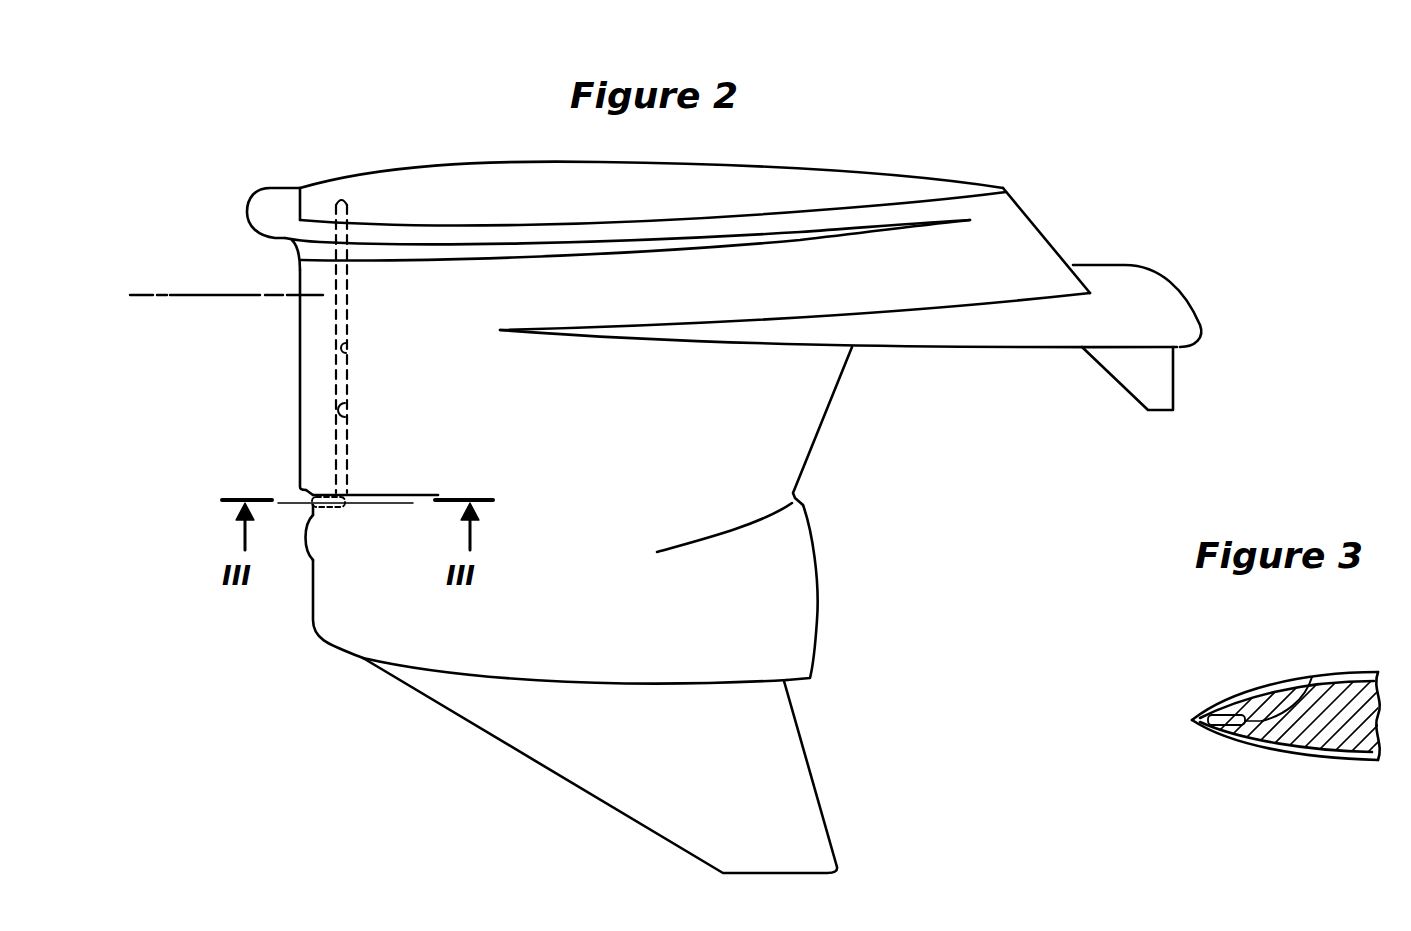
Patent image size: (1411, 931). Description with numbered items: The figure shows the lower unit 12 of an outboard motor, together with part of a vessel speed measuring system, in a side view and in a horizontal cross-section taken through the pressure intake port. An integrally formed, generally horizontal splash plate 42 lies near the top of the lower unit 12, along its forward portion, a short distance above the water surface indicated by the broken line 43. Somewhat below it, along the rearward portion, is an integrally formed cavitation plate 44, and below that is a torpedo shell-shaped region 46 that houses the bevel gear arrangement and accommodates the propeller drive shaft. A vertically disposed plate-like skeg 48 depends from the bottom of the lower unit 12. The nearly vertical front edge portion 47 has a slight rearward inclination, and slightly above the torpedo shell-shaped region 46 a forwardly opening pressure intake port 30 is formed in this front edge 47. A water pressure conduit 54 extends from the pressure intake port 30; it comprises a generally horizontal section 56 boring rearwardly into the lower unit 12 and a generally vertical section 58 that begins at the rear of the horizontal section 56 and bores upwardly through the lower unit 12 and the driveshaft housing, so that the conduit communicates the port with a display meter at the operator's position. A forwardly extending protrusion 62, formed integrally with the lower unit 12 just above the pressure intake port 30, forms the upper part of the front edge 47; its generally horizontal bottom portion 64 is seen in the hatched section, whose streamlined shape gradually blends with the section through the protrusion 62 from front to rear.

In FIG. 2, the lower unit 12 is at (1043, 218).
In FIG. 3, the lower unit 12 is at (1358, 764).
In FIG. 2, the pressure intake port 30 is at (307, 543).
In FIG. 3, the pressure intake port 30 is at (1200, 726).
In FIG. 2, the splash plate 42 is at (247, 212).
In FIG. 2, the water surface line 43 is at (226, 297).
In FIG. 2, the cavitation plate 44 is at (1025, 338).
In FIG. 2, the torpedo shell-shaped region 46 is at (787, 642).
In FIG. 2, the front edge portion 47 is at (298, 347).
In FIG. 2, the skeg 48 is at (803, 847).
In FIG. 2, the water pressure conduit 54 is at (345, 418).
In FIG. 2, the horizontally disposed section 56 is at (345, 507).
In FIG. 3, the horizontally disposed section 56 is at (1222, 716).
In FIG. 2, the vertically disposed section 58 is at (345, 350).
In FIG. 3, the vertically disposed section 58 is at (1311, 678).
In FIG. 2, the protrusion 62 is at (300, 478).
In FIG. 3, the protrusion 62 is at (1193, 720).
In FIG. 2, the bottom portion 64 is at (303, 496).
In FIG. 3, the bottom portion 64 is at (1205, 716).